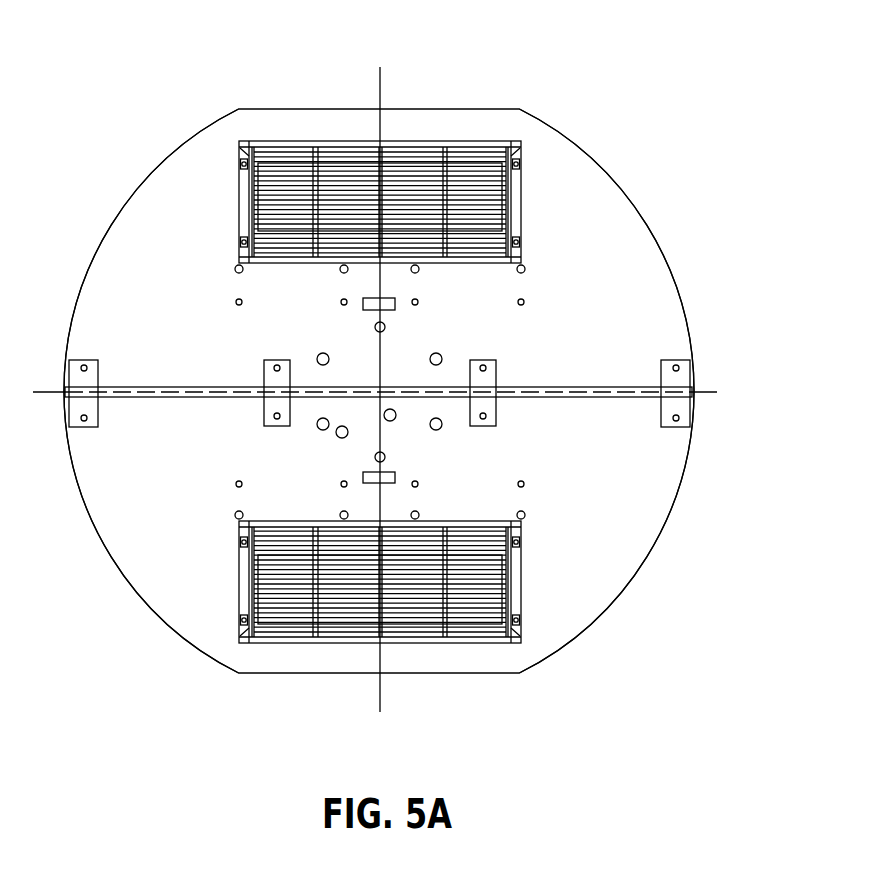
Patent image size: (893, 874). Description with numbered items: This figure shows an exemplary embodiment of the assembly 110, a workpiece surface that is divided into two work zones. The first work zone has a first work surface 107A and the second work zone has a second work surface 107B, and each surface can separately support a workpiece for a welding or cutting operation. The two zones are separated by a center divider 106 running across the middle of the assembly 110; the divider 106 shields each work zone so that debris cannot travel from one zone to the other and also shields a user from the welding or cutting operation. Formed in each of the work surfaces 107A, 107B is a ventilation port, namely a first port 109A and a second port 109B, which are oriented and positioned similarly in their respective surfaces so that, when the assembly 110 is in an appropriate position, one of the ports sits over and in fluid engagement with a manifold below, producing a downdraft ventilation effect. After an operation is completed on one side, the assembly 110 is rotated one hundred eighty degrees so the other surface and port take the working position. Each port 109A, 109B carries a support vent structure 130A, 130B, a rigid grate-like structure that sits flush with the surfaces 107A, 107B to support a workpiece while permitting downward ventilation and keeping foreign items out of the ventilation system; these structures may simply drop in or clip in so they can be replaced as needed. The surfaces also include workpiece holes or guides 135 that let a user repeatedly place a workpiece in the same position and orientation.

The assembly 110 is at (630, 196).
The first work surface 107A is at (638, 282).
The second work surface 107B is at (660, 462).
The center divider 106 is at (636, 387).
The guides 135 is at (395, 478).
The first ventilation port 109A is at (460, 141).
The second ventilation port 109B is at (522, 572).
The first support vent structure 130A is at (473, 186).
The second support vent structure 130B is at (470, 613).